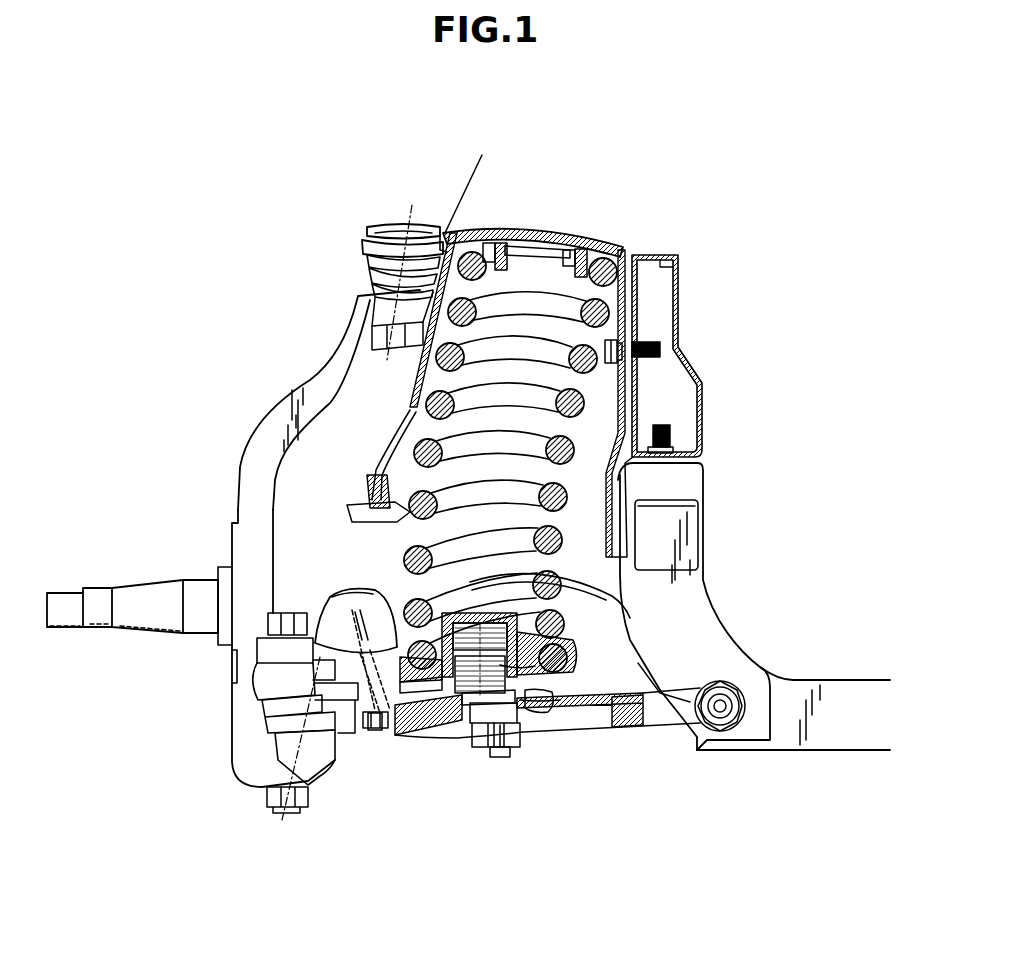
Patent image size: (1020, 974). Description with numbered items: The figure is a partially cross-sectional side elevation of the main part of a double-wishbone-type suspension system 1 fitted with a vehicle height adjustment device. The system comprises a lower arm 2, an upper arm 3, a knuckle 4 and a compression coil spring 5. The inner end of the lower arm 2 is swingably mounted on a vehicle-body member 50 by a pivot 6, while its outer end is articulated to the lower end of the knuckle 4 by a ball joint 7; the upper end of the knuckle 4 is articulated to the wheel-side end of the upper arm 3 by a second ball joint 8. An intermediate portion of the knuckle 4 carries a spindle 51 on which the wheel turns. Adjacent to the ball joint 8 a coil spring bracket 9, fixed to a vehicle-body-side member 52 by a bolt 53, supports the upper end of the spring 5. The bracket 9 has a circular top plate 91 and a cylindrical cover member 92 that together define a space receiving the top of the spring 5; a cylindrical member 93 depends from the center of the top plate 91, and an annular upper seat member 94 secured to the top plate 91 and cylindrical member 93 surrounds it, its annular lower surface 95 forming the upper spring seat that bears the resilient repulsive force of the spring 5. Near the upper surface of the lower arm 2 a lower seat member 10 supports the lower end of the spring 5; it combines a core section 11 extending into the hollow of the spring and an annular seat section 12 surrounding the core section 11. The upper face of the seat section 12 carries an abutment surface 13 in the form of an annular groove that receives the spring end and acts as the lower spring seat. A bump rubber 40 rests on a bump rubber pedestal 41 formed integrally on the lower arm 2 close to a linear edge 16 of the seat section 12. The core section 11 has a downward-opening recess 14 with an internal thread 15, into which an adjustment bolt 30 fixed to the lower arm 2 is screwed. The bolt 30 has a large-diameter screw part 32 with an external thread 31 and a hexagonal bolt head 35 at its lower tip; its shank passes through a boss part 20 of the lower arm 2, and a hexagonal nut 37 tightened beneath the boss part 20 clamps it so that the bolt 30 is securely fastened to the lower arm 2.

The suspension system 1 is at (315, 192).
The lower arm 2 is at (602, 740).
The upper arm 3 is at (455, 335).
The knuckle 4 is at (296, 420).
The compression coil spring 5 is at (403, 563).
The pivot 6 is at (722, 710).
The ball joint 7 is at (332, 778).
The ball joint 8 is at (365, 268).
The coil spring bracket 9 is at (539, 236).
The lower seat member 10 is at (582, 655).
The core section 11 is at (532, 600).
The annular seat section 12 is at (570, 664).
The abutment surface 13 is at (548, 693).
The recess 14 is at (458, 622).
The internal thread 15 is at (488, 610).
The linear edge 16 is at (395, 727).
The boss part 20 is at (538, 706).
The adjustment bolt 30 is at (447, 738).
The external thread 31 is at (450, 696).
The large-diameter screw part 32 is at (481, 728).
The bolt head 35 is at (512, 750).
The hexagonal nut 37 is at (478, 750).
The bump rubber 40 is at (344, 590).
The bump rubber pedestal 41 is at (460, 612).
The vehicle-body member 50 is at (830, 742).
The spindle 51 is at (150, 598).
The member 52 is at (636, 390).
The bolt 53 is at (660, 350).
The circular top plate 91 is at (527, 240).
The cylindrical cover member 92 is at (428, 386).
The cylindrical member 93 is at (520, 252).
The annular upper seat member 94 is at (490, 246).
The lower surface 95 is at (452, 240).